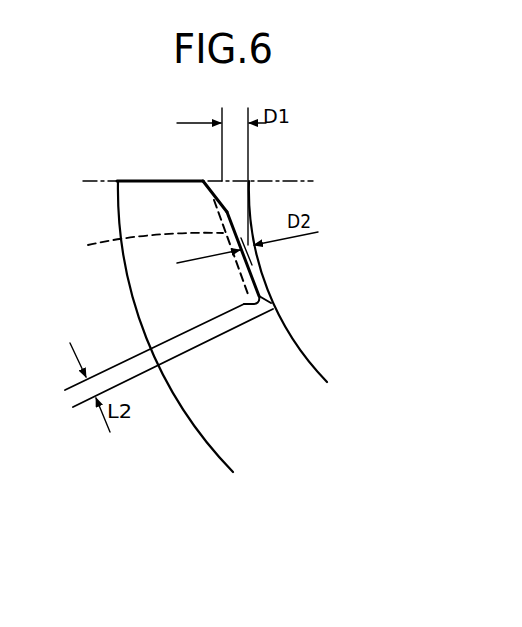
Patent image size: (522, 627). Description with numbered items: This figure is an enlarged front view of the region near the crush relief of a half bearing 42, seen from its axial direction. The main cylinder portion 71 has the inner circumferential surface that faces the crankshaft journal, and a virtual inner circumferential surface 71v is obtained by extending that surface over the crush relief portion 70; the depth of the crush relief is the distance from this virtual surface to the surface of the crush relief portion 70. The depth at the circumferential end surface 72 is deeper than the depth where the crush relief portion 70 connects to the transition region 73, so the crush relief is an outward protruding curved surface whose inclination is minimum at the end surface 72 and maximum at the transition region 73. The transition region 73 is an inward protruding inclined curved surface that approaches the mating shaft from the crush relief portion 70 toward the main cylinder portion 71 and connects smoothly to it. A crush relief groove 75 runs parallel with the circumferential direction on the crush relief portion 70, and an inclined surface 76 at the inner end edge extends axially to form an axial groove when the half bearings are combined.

The half bearing 42 is at (174, 441).
The crush relief portion 70 is at (227, 213).
The main cylinder portion 71 is at (317, 360).
The virtual inner circumferential surface 71v is at (252, 215).
The end surface 72 is at (137, 181).
The transition region 73 is at (268, 294).
The crush relief groove 75 is at (156, 248).
The inclined surface 76 is at (210, 179).